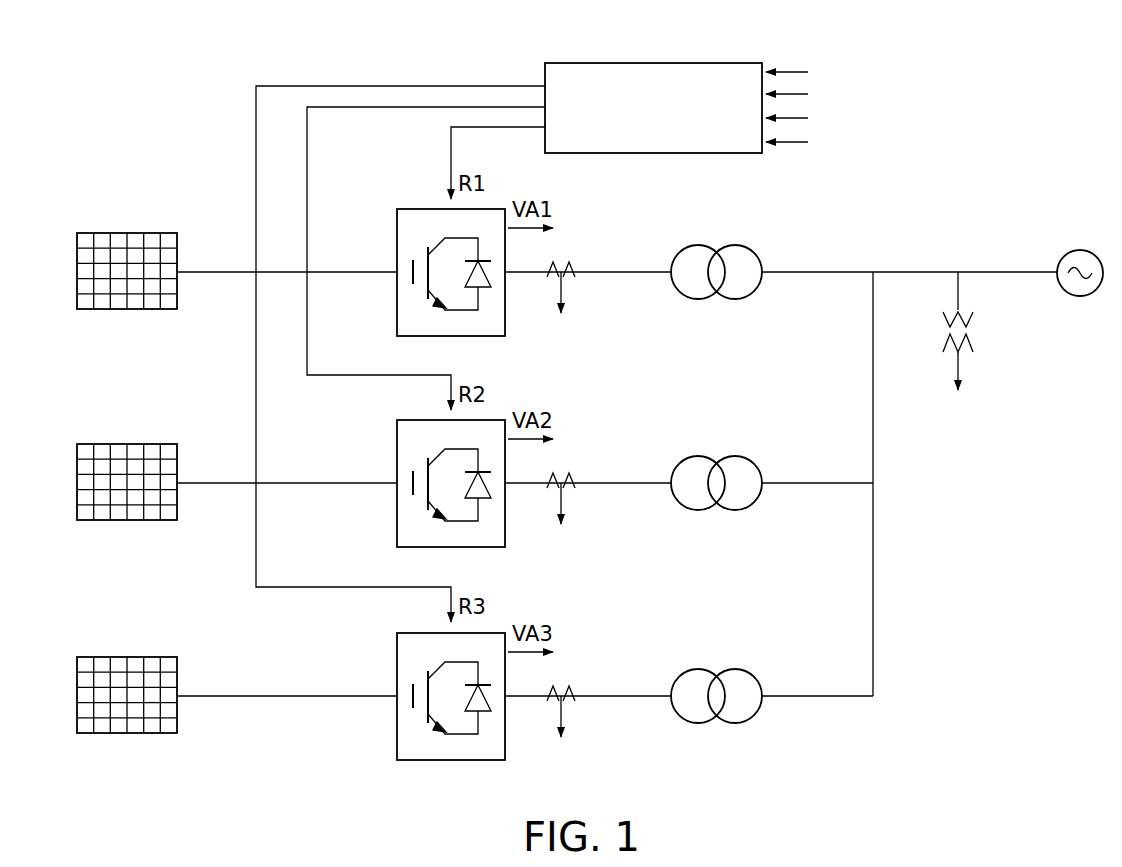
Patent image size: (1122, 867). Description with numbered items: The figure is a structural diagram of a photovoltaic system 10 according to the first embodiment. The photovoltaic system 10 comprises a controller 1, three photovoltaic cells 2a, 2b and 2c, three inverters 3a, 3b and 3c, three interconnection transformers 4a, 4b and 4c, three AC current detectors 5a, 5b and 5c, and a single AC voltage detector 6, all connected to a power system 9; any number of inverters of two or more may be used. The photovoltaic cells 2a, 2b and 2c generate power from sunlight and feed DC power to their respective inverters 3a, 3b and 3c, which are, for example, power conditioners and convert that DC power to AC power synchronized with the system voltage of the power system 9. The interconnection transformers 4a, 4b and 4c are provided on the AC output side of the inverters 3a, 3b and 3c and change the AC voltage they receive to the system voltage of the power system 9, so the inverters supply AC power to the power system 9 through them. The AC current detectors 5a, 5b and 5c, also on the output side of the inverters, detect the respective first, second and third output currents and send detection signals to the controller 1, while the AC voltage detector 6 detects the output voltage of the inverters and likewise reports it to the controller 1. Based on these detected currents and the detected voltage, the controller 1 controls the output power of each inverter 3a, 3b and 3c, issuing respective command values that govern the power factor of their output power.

The controller 1 is at (722, 62).
The photovoltaic cell 2a is at (120, 314).
The photovoltaic cell 2b is at (127, 509).
The photovoltaic cell 2c is at (127, 722).
The inverter 3a is at (397, 316).
The inverter 3b is at (424, 483).
The inverter 3c is at (424, 696).
The interconnection transformer 4a is at (733, 245).
The interconnection transformer 4b is at (716, 459).
The interconnection transformer 4c is at (716, 672).
The AC current detector 5a is at (574, 260).
The AC current detector 5b is at (576, 498).
The AC current detector 5c is at (575, 711).
The AC voltage detector 6 is at (976, 315).
The power system 9 is at (1079, 250).
The photovoltaic system 10 is at (960, 195).